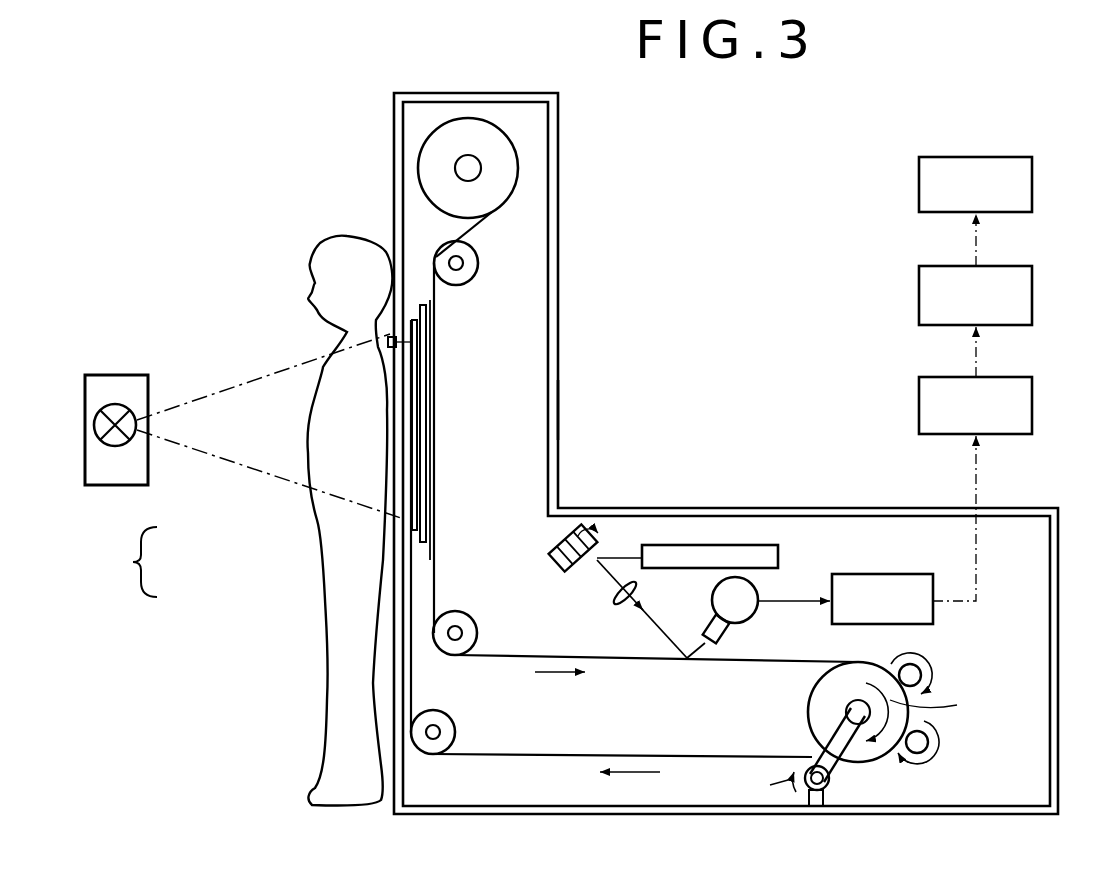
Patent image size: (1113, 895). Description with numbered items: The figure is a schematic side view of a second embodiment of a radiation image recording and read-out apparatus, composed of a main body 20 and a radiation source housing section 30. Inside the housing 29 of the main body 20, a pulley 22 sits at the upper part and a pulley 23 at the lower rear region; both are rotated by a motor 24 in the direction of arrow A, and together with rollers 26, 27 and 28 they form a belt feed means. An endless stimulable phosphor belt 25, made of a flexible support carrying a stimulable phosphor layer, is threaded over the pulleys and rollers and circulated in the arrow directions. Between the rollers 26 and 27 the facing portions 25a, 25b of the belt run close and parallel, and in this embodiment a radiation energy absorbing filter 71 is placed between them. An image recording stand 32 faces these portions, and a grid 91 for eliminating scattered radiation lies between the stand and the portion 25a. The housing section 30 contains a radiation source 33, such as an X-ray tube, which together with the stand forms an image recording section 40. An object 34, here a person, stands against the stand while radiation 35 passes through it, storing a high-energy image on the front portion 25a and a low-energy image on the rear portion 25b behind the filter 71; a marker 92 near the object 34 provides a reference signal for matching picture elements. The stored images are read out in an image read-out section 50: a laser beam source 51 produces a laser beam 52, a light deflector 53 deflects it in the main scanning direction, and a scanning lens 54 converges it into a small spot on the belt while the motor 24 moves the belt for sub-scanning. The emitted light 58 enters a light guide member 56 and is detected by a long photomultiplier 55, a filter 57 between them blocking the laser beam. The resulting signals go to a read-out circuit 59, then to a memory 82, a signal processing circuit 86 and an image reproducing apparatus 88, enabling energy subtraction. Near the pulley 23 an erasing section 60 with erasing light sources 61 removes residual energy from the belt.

The main body 20 is at (566, 208).
The pulley 22 is at (497, 152).
The pulley 23 is at (825, 713).
The motor 24 is at (828, 790).
The stimulable phosphor belt 25 is at (436, 572).
The portion of the stimulable phosphor belt 25a is at (431, 372).
The portion of the stimulable phosphor belt 25b is at (436, 415).
The roller 26 is at (468, 262).
The roller 27 is at (464, 632).
The roller 28 is at (445, 730).
The housing 29 is at (560, 410).
The radiation source housing section 30 is at (156, 363).
The image recording stand 32 is at (412, 487).
The radiation source 33 is at (123, 447).
The object 34 is at (327, 447).
The radiation 35 is at (225, 390).
The image recording section 40 is at (127, 562).
The image read-out section 50 is at (800, 547).
The laser beam source 51 is at (725, 545).
The laser beam 52 is at (622, 558).
The light deflector 53 is at (566, 530).
The scanning lens 54 is at (617, 594).
The long photomultiplier 55 is at (757, 612).
The light guide member 56 is at (727, 634).
The filter 57 is at (715, 615).
The emitted light 58 is at (707, 660).
The read-out circuit 59 is at (922, 574).
The erasing section 60 is at (952, 678).
The erasing light source 61 is at (920, 665).
The radiation energy absorbing filter 71 is at (425, 462).
The memory 82 is at (1032, 406).
The signal processing circuit 86 is at (1032, 295).
The image reproducing apparatus 88 is at (1032, 185).
The grid 91 is at (408, 345).
The marker 92 is at (388, 340).